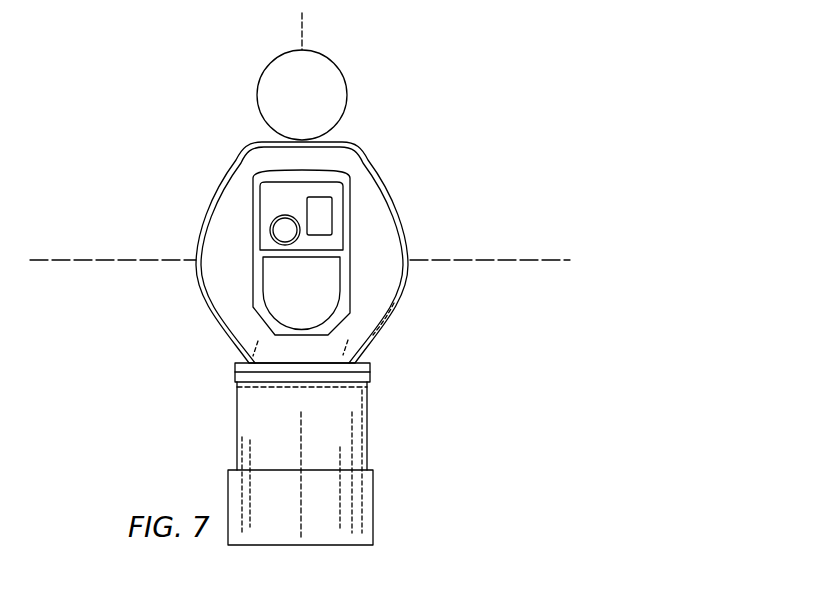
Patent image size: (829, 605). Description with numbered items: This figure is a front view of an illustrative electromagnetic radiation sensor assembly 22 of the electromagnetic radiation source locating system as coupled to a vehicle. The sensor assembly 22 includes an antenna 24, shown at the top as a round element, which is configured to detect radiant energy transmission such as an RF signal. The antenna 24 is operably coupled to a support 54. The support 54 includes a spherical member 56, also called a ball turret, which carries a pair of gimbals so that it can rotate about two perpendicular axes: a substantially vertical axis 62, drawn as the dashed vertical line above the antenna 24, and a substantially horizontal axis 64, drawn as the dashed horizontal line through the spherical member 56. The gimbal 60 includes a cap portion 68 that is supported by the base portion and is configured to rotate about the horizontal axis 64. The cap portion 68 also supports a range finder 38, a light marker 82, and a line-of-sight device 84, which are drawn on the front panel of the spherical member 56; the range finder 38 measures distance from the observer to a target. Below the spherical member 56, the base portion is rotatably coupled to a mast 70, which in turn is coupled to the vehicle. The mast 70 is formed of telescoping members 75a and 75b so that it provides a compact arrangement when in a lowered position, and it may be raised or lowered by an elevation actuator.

The electromagnetic radiation sensor assembly 22 is at (432, 105).
The antenna 24 is at (288, 94).
The range finder 38 is at (277, 232).
The support 54 is at (418, 416).
The spherical member 56 is at (412, 237).
The gimbal 60 is at (225, 303).
The vertical axis 62 is at (303, 32).
The horizontal axis 64 is at (505, 260).
The cap portion 68 is at (228, 208).
The mast 70 is at (368, 503).
The telescoping member 75a is at (250, 433).
The telescoping member 75b is at (357, 531).
The light marker 82 is at (325, 210).
The line-of-sight device 84 is at (275, 297).